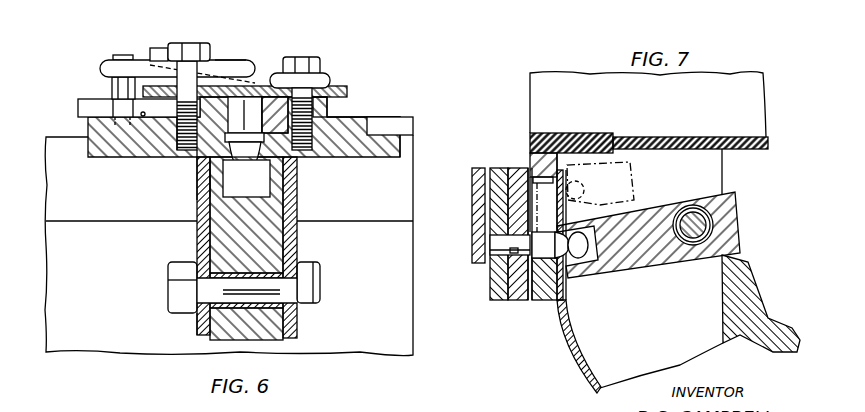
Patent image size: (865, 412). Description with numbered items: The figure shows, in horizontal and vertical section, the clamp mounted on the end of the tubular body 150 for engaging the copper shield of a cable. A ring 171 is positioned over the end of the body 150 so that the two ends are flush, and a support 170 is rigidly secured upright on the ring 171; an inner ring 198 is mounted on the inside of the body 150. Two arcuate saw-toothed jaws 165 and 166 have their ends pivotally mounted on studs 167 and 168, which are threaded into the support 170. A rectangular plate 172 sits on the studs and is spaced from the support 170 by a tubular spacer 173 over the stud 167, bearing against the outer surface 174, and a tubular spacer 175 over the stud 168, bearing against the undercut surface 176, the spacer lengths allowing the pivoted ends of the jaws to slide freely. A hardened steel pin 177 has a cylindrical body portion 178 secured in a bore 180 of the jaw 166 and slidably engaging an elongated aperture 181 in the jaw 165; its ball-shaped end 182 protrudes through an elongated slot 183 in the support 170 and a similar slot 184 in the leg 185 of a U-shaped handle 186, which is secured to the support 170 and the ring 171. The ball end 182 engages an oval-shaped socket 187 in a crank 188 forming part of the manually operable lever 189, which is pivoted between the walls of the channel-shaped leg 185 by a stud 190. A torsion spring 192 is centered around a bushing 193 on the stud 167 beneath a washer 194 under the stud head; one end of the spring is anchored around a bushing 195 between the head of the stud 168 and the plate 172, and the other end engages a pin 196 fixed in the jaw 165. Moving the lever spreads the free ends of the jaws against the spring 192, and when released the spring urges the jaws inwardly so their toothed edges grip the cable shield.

In FIG. 6, the body 150 is at (90, 353).
In FIG. 7, the body 150 is at (690, 137).
In FIG. 6, the jaw 165 is at (78, 106).
In FIG. 7, the jaw 165 is at (497, 168).
In FIG. 6, the jaw 166 is at (368, 117).
In FIG. 7, the jaw 166 is at (515, 168).
In FIG. 6, the stud 167 is at (190, 43).
In FIG. 6, the stud 168 is at (303, 57).
In FIG. 6, the support 170 is at (93, 158).
In FIG. 6, the ring 171 is at (88, 222).
In FIG. 7, the ring 171 is at (613, 153).
In FIG. 6, the rectangular plate 172 is at (338, 87).
In FIG. 7, the rectangular plate 172 is at (478, 168).
In FIG. 6, the tubular spacer 173 is at (175, 116).
In FIG. 6, the outer surface 174 is at (144, 118).
In FIG. 6, the tubular spacer 175 is at (319, 107).
In FIG. 6, the undercut surface 176 is at (365, 132).
In FIG. 6, the hardened steel pin 177 is at (262, 162).
In FIG. 7, the cylindrical body portion 178 is at (490, 240).
In FIG. 7, the bore 180 is at (515, 300).
In FIG. 6, the elongated aperture 181 is at (262, 104).
In FIG. 6, the ball-shaped end 182 is at (229, 167).
In FIG. 7, the ball-shaped end 182 is at (570, 300).
In FIG. 6, the elongated slot 183 is at (221, 157).
In FIG. 7, the elongated slot 183 is at (543, 300).
In FIG. 7, the slot 184 is at (649, 154).
In FIG. 6, the leg 185 is at (268, 181).
In FIG. 7, the leg 185 is at (575, 262).
In FIG. 7, the U-shaped handle 186 is at (567, 363).
In FIG. 6, the oval-shaped socket 187 is at (193, 323).
In FIG. 7, the oval-shaped socket 187 is at (723, 174).
In FIG. 6, the crank 188 is at (212, 340).
In FIG. 7, the crank 188 is at (655, 263).
In FIG. 7, the manually operable lever 189 is at (745, 270).
In FIG. 6, the stud 190 is at (320, 263).
In FIG. 7, the stud 190 is at (693, 238).
In FIG. 6, the torsion spring 192 is at (166, 52).
In FIG. 6, the bushing 193 is at (222, 60).
In FIG. 6, the washer 194 is at (240, 58).
In FIG. 6, the bushing 195 is at (332, 74).
In FIG. 6, the pin 196 is at (99, 72).
In FIG. 7, the ring 198 is at (550, 133).